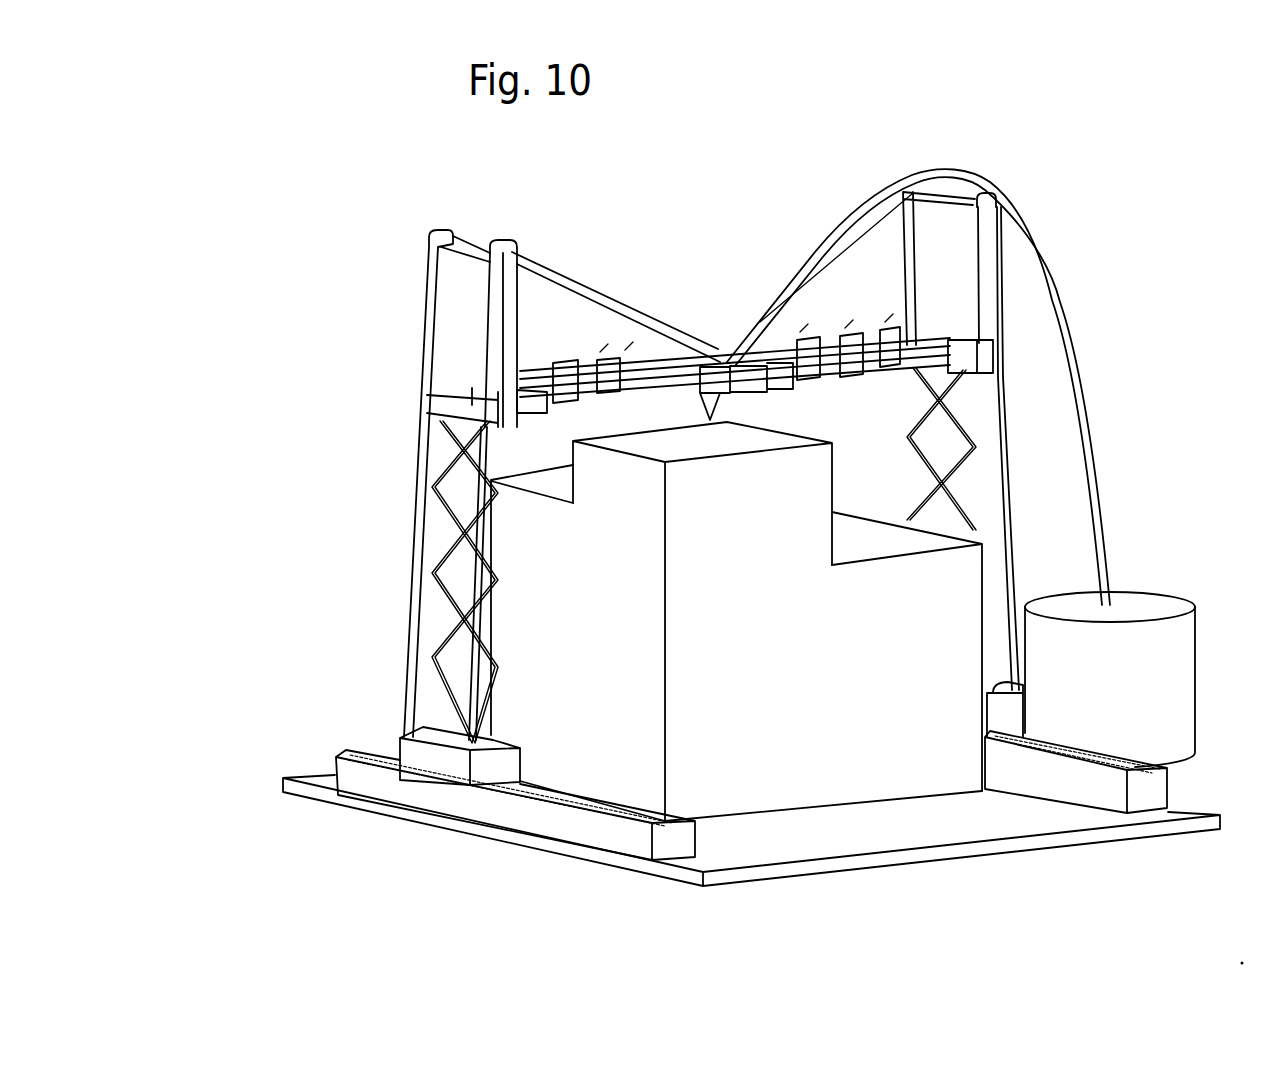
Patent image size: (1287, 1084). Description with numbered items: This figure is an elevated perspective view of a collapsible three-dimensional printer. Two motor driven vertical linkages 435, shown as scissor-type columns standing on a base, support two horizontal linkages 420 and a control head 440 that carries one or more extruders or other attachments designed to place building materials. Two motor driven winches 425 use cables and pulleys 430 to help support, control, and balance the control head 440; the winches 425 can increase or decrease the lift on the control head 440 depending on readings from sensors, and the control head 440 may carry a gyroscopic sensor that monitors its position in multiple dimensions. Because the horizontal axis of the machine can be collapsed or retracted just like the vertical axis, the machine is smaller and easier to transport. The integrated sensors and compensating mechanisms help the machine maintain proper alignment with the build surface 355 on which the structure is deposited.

The build surface 355 is at (933, 827).
The horizontal linkage 420 is at (627, 362).
The motor driven winch 425 is at (452, 762).
The pulley 430 is at (427, 240).
The motor driven vertical linkage 435 is at (410, 532).
The control head 440 is at (743, 380).